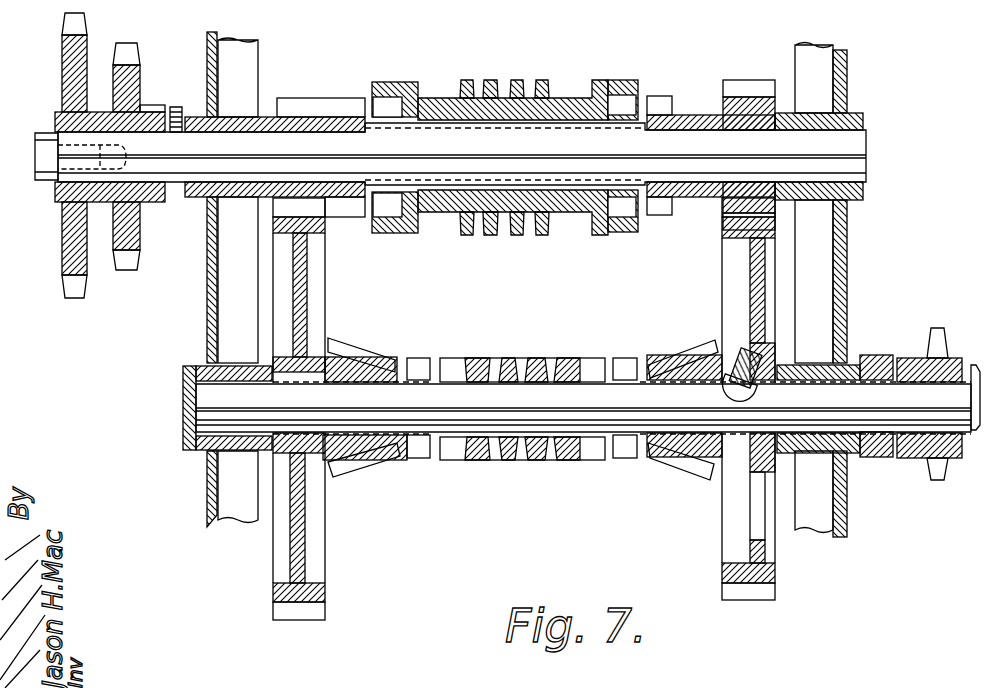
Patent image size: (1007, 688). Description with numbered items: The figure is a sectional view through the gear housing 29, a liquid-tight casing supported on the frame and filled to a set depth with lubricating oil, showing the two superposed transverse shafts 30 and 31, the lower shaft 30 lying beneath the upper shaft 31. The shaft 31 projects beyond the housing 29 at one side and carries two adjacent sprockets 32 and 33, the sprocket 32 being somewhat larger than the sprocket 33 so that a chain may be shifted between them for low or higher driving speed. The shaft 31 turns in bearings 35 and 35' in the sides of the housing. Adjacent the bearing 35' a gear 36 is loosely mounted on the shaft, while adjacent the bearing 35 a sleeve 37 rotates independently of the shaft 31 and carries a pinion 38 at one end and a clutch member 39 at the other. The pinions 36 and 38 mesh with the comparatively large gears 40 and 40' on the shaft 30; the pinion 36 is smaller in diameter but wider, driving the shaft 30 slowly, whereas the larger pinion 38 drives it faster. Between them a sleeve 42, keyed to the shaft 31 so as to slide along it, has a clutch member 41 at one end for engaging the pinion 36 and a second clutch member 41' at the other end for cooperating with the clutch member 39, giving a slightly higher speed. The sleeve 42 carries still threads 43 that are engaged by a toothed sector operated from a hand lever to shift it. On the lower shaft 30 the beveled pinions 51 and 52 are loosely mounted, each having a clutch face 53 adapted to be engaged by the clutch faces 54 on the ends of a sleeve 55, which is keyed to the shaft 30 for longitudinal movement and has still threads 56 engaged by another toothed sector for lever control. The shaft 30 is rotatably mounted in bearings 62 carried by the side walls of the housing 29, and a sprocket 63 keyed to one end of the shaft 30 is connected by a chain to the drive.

The gear housing 29 is at (848, 265).
The shaft 30 is at (595, 425).
The shaft 31 is at (708, 170).
The sprocket 32 is at (62, 62).
The sprocket 33 is at (133, 87).
The bearing 35 is at (837, 141).
The bearing 35' is at (275, 127).
The gear 36 is at (310, 98).
The sleeve 37 is at (688, 115).
The pinion 38 is at (738, 95).
The clutch member 39 is at (658, 98).
The gear 40 is at (323, 409).
The gear 40' is at (725, 399).
The clutch member 41 is at (396, 139).
The clutch member 41' is at (630, 137).
The sleeve 42 is at (545, 98).
The still threads 43 is at (492, 83).
The beveled pinion 51 is at (685, 465).
The beveled pinion 52 is at (363, 463).
The clutch face 53 is at (420, 360).
The clutch faces 54 is at (455, 360).
The sleeve 55 is at (565, 360).
The still threads 56 is at (514, 360).
The bearings 62 is at (228, 370).
The sprocket 63 is at (940, 345).